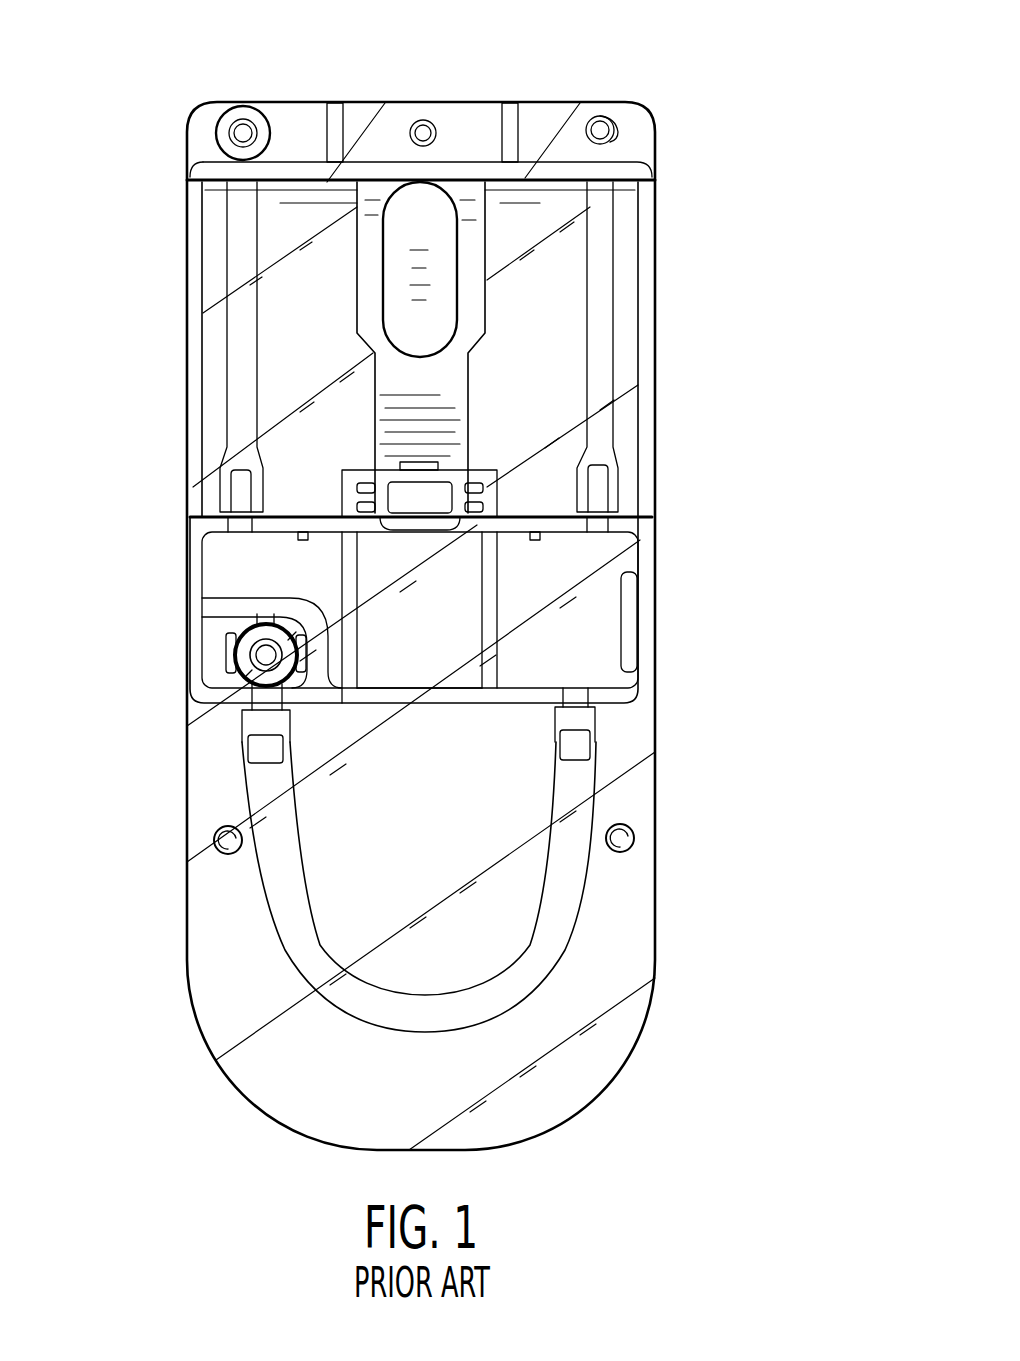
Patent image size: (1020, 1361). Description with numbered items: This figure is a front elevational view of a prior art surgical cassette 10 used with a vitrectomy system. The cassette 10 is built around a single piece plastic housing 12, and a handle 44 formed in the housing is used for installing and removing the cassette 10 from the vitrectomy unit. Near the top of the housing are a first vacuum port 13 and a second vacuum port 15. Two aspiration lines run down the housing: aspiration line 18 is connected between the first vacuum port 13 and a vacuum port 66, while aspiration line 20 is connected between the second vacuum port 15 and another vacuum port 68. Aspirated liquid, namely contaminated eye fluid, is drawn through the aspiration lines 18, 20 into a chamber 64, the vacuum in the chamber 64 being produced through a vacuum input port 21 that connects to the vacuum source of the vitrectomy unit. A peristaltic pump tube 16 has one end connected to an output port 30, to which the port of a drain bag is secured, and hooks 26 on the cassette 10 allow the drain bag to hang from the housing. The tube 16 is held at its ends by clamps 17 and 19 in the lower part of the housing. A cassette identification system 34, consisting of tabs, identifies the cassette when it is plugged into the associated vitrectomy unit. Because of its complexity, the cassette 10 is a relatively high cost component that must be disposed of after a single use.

The cassette 10 is at (405, 60).
The housing 12 is at (236, 1090).
The first vacuum port 13 is at (615, 130).
The second vacuum port 15 is at (247, 105).
The peristaltic pump tube 16 is at (580, 905).
The tube clamp 17 is at (598, 743).
The aspiration line 18 is at (586, 383).
The tube clamp 19 is at (262, 745).
The aspiration line 20 is at (258, 333).
The vacuum input port 21 is at (424, 462).
The hooks 26 is at (628, 836).
The output port 30 is at (258, 628).
The cassette identification system 34 is at (634, 636).
The handle 44 is at (486, 320).
The chamber 64 is at (418, 657).
The vacuum port 66 is at (604, 485).
The vacuum port 68 is at (240, 490).